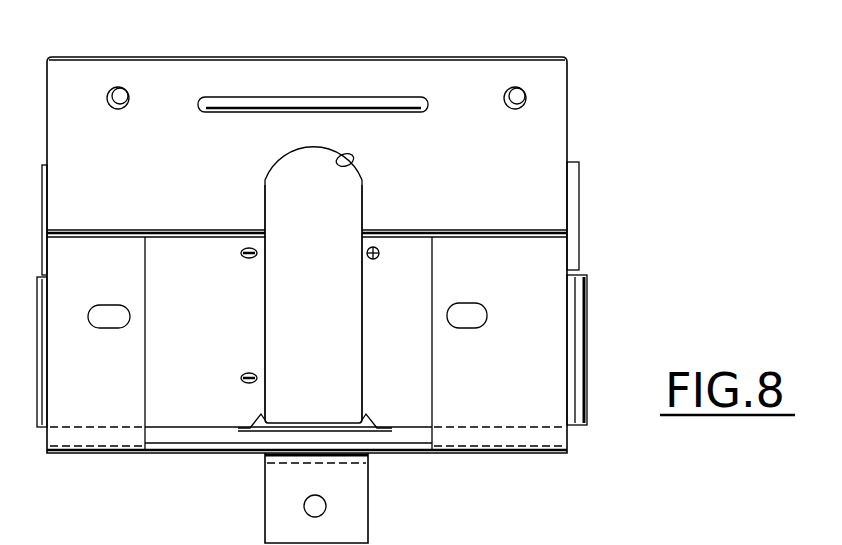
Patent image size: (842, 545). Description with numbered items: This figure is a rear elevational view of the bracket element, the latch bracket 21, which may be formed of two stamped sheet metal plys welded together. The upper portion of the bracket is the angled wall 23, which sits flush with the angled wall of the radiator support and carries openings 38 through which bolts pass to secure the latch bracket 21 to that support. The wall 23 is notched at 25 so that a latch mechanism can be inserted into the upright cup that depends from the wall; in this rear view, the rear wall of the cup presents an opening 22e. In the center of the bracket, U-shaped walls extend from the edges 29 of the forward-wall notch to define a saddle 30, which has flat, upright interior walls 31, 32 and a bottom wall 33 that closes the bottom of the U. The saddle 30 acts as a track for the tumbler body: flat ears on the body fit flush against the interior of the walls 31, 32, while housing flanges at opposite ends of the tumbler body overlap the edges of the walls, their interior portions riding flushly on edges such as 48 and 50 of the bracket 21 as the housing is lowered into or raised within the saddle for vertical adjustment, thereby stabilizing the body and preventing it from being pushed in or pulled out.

The latch bracket 21 is at (301, 44).
The opening 22e is at (146, 353).
The angled wall 23 is at (552, 138).
The rounded notch 25 is at (354, 163).
The edges of the notch 29 is at (263, 393).
The saddle 30 is at (306, 162).
The interior wall 31 is at (265, 308).
The interior wall 32 is at (362, 342).
The bottom wall 33 is at (306, 425).
The opening 38 is at (126, 90).
The edge 48 is at (370, 268).
The edge 50 is at (258, 272).